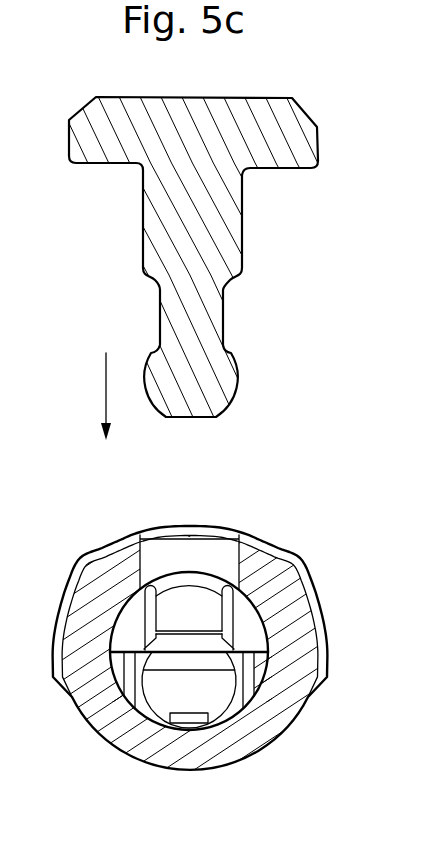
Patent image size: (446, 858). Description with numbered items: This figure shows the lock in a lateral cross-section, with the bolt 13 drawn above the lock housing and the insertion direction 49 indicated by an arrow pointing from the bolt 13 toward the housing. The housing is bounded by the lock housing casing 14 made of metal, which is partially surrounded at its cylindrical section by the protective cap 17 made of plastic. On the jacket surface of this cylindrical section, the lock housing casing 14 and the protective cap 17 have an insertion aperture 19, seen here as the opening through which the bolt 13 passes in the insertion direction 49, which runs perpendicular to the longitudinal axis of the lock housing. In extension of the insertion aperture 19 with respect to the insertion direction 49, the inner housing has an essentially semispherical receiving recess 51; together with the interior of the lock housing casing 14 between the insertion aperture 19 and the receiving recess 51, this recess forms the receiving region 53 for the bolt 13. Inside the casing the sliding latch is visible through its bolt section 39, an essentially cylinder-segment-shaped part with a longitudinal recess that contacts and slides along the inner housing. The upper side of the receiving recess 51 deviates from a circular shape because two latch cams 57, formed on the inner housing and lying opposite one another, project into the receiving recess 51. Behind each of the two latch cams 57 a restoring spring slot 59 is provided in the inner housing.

The bolt 13 is at (66, 108).
The lock housing casing 14 is at (207, 750).
The protective cap 17 is at (80, 575).
The insertion aperture 19 is at (157, 560).
The bolt section 39 is at (133, 612).
The insertion direction 49 is at (103, 364).
The receiving recess 51 is at (162, 695).
The receiving region 53 is at (191, 598).
The latch cams 57 is at (241, 655).
The restoring spring slot 59 is at (130, 690).